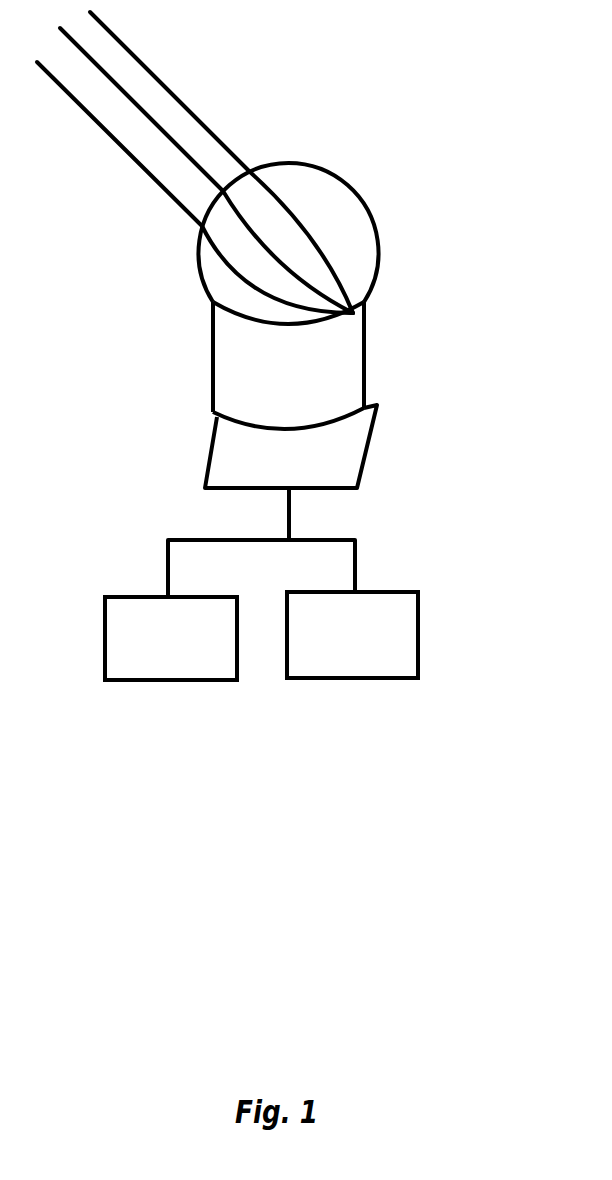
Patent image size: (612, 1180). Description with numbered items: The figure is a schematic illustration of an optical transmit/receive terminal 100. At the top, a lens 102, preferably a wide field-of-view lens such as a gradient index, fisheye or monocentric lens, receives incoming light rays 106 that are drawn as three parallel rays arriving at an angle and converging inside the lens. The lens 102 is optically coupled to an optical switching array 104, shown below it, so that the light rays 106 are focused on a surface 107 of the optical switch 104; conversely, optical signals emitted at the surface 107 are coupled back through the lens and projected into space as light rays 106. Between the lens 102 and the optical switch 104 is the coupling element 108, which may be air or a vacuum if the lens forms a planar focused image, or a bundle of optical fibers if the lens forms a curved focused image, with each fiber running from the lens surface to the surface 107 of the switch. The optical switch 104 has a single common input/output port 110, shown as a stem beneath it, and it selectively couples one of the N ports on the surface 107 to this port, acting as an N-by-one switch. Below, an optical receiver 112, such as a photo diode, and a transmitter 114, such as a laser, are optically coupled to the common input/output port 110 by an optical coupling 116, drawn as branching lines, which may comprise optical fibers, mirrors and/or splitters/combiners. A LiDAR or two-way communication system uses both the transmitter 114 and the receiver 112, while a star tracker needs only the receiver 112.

The optical transmit/receive terminal 100 is at (462, 39).
The lens 102 is at (350, 187).
The optical switching array 104 is at (366, 455).
The light rays 106 is at (141, 62).
The surface 107 is at (243, 452).
The bundle of optical fibers 108 is at (366, 342).
The common input/output port 110 is at (292, 491).
The optical receiver 112 is at (105, 642).
The transmitter 114 is at (418, 632).
The optical coupling 116 is at (200, 539).